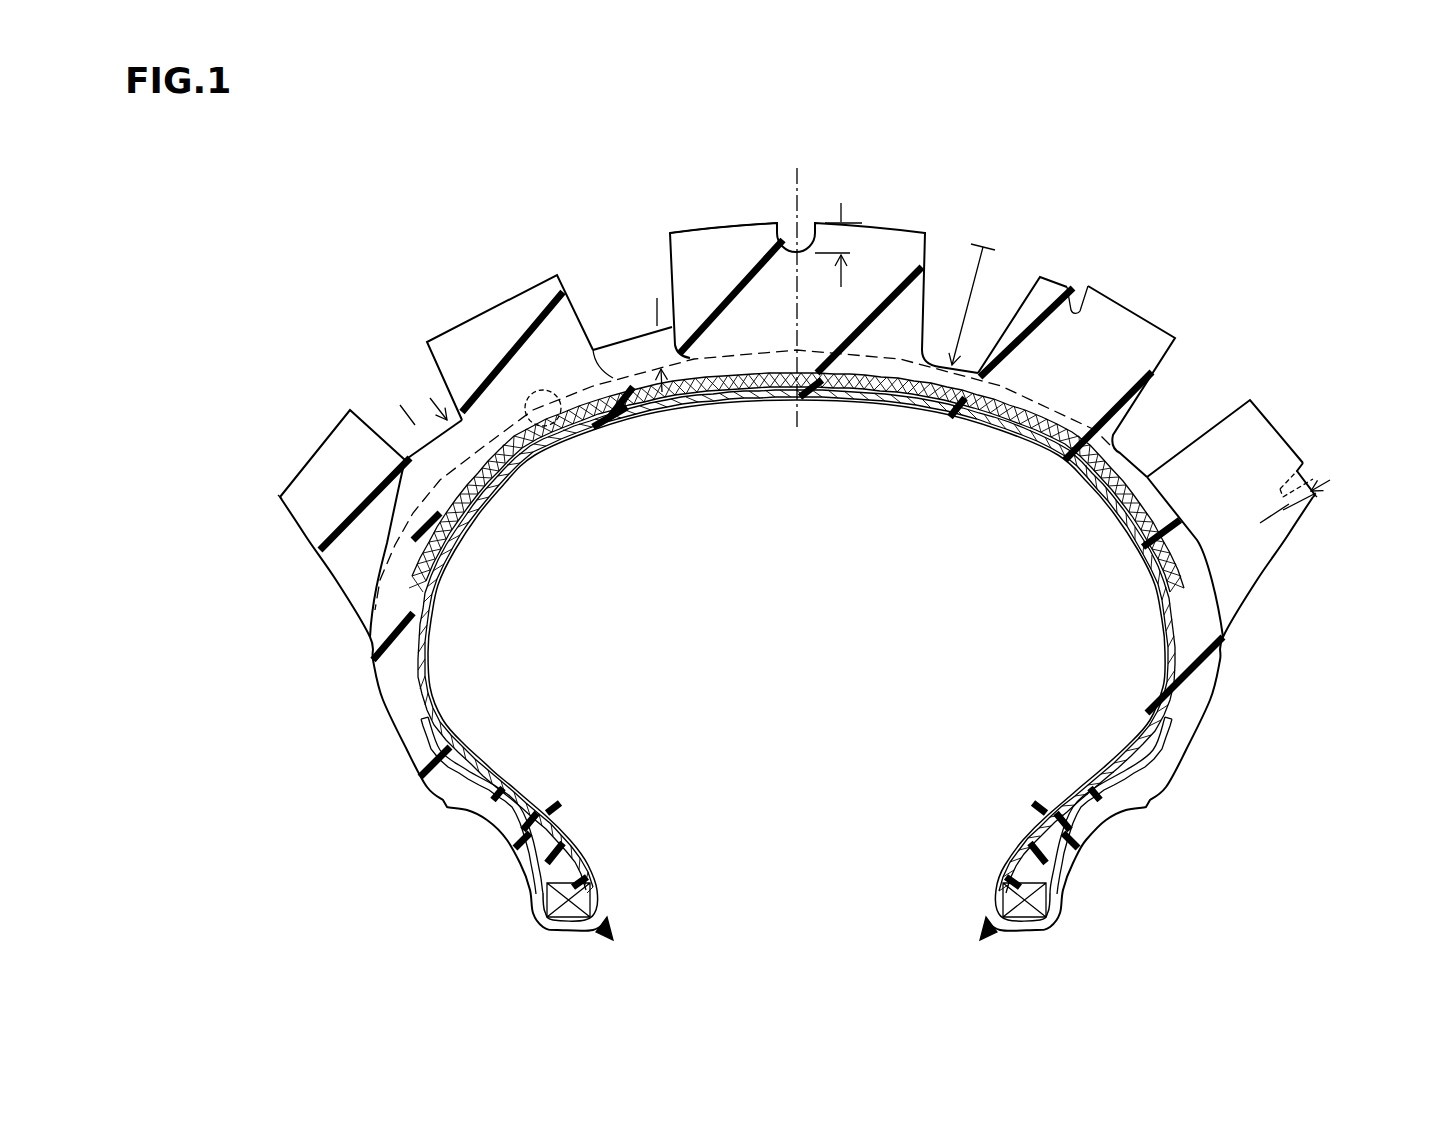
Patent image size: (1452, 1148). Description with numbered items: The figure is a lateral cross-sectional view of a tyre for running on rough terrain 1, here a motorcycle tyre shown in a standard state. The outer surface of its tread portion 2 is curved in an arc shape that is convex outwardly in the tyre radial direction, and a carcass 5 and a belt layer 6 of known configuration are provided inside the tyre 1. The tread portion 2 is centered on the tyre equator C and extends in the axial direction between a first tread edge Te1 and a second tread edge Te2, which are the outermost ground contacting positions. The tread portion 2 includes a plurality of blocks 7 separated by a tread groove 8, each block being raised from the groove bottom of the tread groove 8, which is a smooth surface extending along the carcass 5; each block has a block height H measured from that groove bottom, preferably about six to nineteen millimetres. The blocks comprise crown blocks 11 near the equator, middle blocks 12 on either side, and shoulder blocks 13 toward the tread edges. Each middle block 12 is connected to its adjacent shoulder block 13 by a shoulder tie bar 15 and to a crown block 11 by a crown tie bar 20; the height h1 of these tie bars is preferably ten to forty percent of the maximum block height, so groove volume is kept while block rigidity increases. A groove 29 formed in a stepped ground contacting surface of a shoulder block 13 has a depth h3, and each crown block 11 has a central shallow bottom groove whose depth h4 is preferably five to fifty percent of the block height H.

The tyre for running on rough terrain 1 is at (817, 524).
The tread portion 2 is at (826, 481).
The carcass 5 is at (1172, 635).
The belt layer 6 is at (912, 393).
The blocks 7 is at (679, 173).
The tread groove 8 is at (557, 420).
The crown blocks 11 is at (722, 226).
The middle blocks 12 is at (455, 304).
The shoulder blocks 13 is at (311, 431).
The shoulder tie bar 15 is at (415, 428).
The crown tie bar 20 is at (620, 317).
The groove 29 is at (1309, 469).
The tyre equator C is at (796, 293).
The first tread edge Te1 is at (280, 497).
The second tread edge Te2 is at (1317, 497).
The block height H is at (970, 306).
The height of tie bars h1 is at (657, 350).
The depth of groove h3 is at (1312, 497).
The depth of shallow bottom groove h4 is at (846, 215).